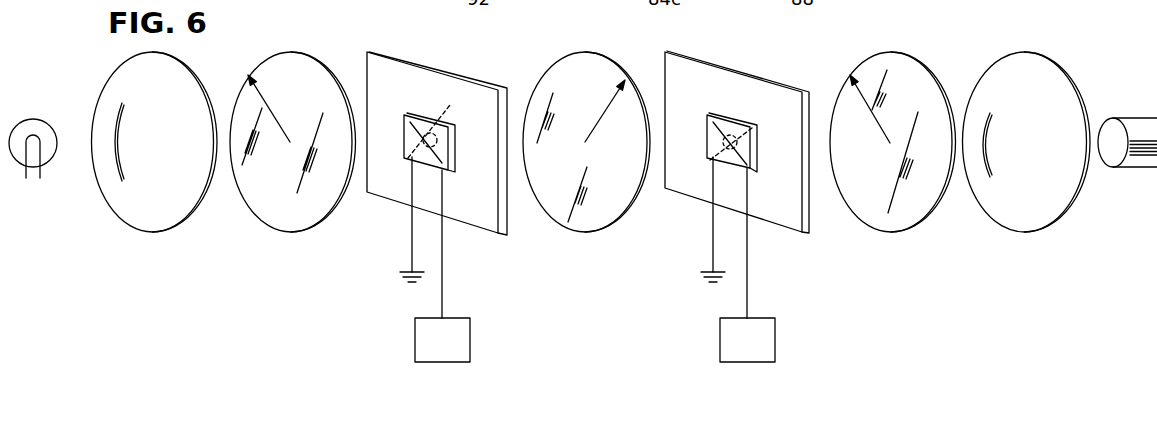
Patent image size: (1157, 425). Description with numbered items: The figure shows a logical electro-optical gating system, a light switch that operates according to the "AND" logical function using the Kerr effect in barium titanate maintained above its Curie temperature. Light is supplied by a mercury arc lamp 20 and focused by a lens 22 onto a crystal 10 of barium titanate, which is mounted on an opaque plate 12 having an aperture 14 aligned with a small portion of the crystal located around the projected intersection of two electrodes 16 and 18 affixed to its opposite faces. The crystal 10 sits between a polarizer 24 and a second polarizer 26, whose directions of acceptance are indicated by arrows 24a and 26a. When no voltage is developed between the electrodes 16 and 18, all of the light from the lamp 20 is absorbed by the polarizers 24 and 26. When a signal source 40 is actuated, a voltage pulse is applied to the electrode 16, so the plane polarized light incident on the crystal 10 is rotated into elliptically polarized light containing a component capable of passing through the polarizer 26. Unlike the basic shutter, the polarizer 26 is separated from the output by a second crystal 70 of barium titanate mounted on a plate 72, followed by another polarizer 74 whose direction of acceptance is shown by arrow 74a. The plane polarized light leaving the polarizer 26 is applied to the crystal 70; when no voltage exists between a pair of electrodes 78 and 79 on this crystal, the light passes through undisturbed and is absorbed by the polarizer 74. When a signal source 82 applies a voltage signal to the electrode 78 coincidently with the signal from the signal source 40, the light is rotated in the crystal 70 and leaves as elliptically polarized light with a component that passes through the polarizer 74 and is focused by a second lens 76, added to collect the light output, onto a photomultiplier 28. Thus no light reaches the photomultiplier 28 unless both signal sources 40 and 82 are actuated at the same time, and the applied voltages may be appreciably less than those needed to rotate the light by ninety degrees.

The mercury arc lamp 20 is at (33, 125).
The lens 22 is at (145, 222).
The polarizer 24 is at (288, 218).
The arrow 24a is at (270, 112).
The opaque plate 12 is at (487, 92).
The crystal 10 is at (453, 150).
The electrode 16 is at (420, 118).
The aperture 14 is at (442, 125).
The electrode 18 is at (428, 152).
The signal source 40 is at (458, 348).
The second polarizer 26 is at (588, 220).
The arrow 26a is at (600, 118).
The plate 72 is at (778, 98).
The second crystal of barium titanate 70 is at (738, 121).
The electrode 78 is at (712, 127).
The electrode 79 is at (729, 152).
The signal source 82 is at (770, 343).
The polarizer 74 is at (890, 62).
The arrow 74a is at (872, 115).
The second lens 76 is at (1022, 68).
The photomultiplier 28 is at (1137, 162).